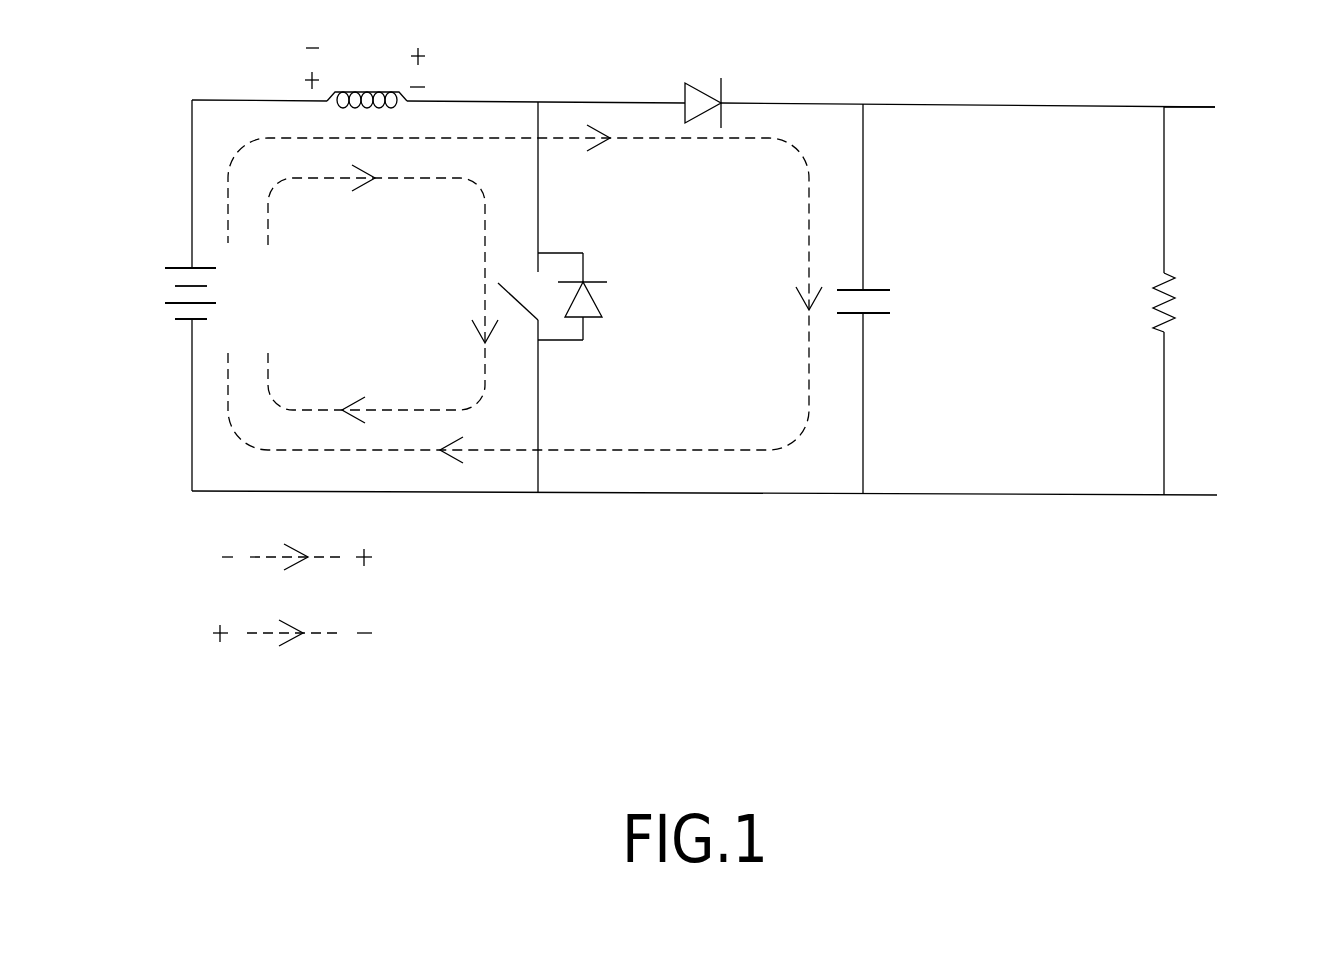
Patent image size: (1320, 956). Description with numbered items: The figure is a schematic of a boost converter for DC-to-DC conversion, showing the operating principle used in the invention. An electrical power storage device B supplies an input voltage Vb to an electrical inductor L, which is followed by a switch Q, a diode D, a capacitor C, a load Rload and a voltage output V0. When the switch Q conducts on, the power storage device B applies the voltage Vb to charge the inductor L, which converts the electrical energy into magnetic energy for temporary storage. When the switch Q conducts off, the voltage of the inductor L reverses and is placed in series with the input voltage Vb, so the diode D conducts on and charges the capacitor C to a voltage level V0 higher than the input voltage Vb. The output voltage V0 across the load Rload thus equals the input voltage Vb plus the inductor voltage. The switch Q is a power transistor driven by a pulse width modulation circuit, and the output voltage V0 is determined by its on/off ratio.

The electrical power storage device B is at (180, 262).
The input voltage Vb is at (165, 293).
The electrical inductor L is at (365, 76).
The switch Q is at (569, 297).
The diode D is at (703, 79).
The capacitor C is at (882, 299).
The load Rload is at (1211, 301).
The voltage output V0 is at (1214, 110).